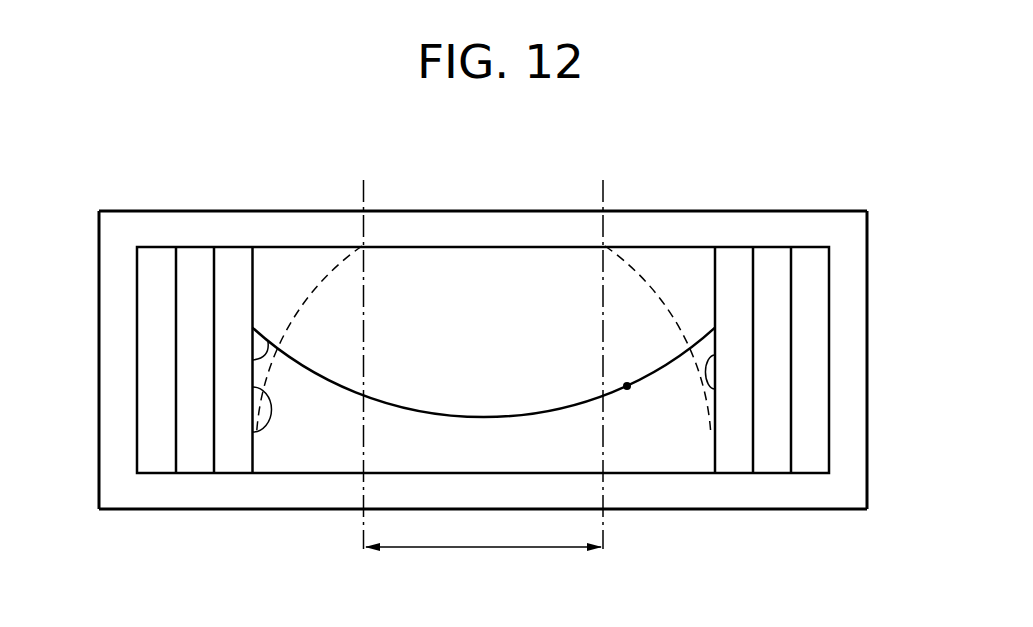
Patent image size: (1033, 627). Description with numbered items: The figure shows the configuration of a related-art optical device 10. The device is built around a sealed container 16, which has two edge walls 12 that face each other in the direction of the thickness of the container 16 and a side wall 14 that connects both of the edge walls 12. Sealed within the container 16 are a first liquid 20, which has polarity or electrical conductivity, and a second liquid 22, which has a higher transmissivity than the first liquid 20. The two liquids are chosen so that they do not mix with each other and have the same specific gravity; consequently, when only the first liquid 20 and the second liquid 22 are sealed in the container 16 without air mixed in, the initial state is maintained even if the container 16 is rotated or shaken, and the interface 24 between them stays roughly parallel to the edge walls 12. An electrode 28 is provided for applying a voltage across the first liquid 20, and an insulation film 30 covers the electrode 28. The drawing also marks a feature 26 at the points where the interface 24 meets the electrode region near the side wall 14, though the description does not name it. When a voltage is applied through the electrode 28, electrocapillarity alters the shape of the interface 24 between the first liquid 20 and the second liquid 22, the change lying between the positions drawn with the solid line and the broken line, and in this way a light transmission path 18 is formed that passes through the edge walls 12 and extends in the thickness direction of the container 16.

The optical device 10 is at (641, 200).
The edge walls 12 is at (305, 226).
The side wall 14 is at (99, 277).
The sealed container 16 is at (830, 211).
The light transmission path 18 is at (437, 546).
The first liquid 20 is at (483, 263).
The second liquid 22 is at (520, 445).
The interface 24 is at (663, 305).
The attachment portion 26 is at (253, 431).
The electrode 28 is at (157, 460).
The insulation film 30 is at (200, 457).